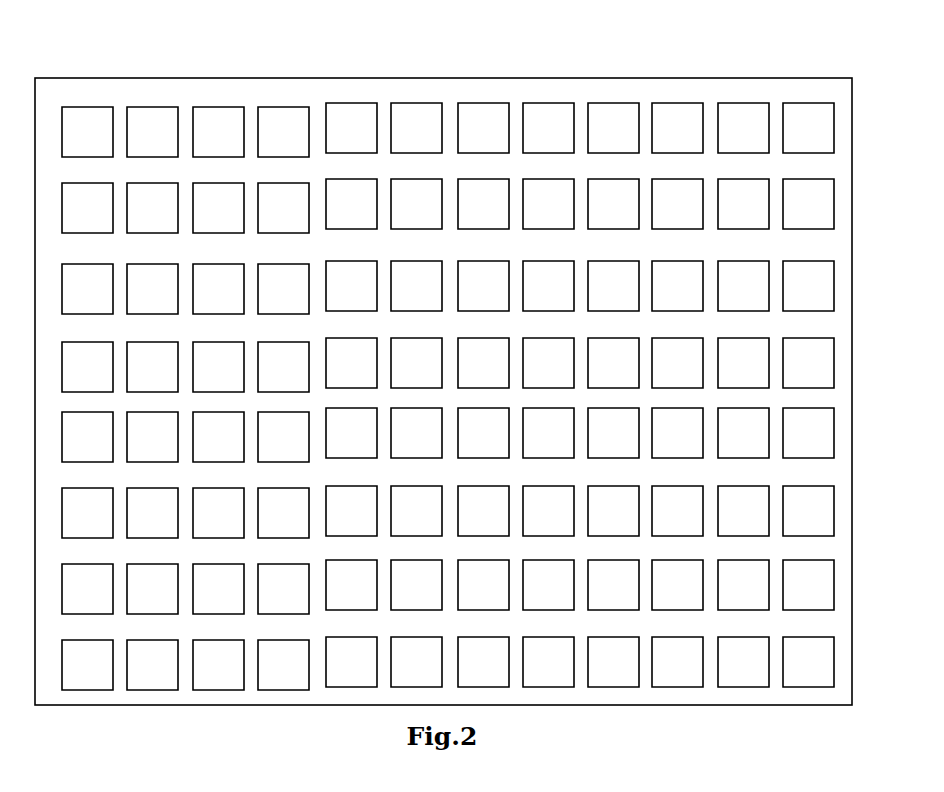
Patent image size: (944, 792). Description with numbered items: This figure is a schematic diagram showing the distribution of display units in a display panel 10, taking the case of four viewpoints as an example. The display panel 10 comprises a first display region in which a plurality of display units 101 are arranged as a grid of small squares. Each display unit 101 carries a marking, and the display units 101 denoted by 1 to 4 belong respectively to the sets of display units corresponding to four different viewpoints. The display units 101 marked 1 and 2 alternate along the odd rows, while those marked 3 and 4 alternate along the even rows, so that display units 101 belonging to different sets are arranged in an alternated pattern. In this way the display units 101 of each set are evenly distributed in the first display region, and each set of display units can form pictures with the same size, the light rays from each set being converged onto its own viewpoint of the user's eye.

The display panel 10 is at (685, 78).
The display unit 101 is at (90, 107).
The display unit denoted by 1 is at (415, 358).
The display unit denoted by 2 is at (480, 358).
The display unit denoted by 3 is at (415, 434).
The display unit denoted by 4 is at (480, 434).